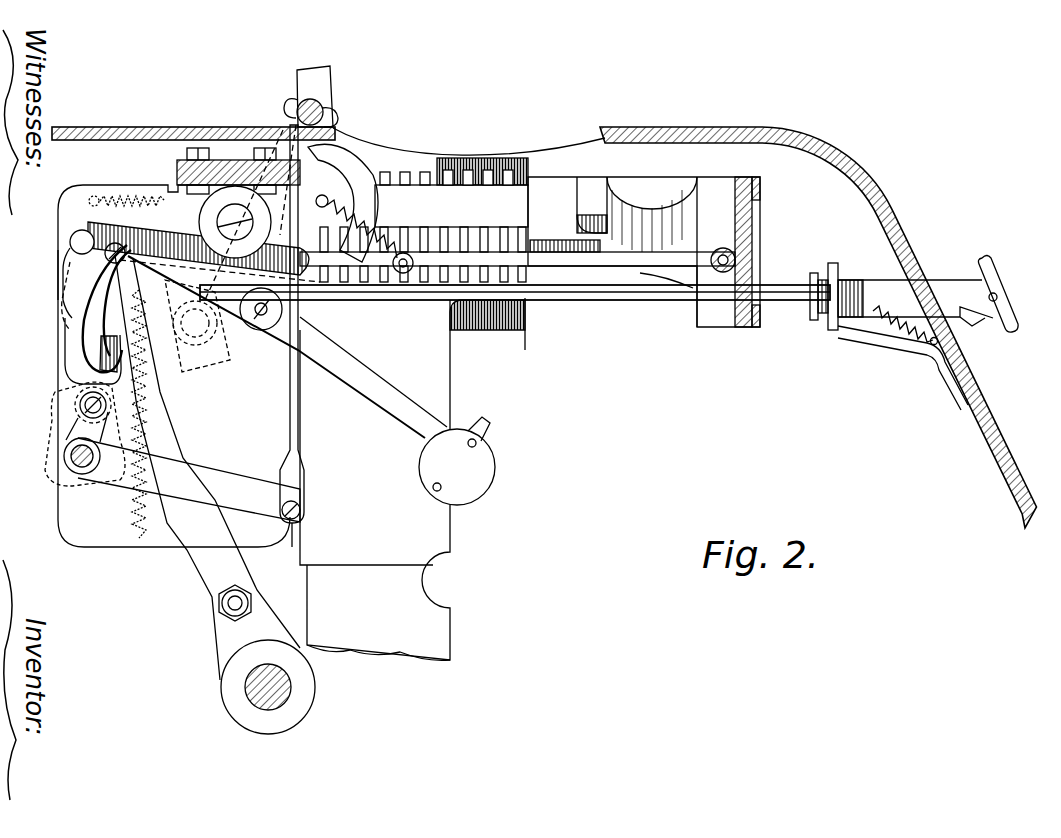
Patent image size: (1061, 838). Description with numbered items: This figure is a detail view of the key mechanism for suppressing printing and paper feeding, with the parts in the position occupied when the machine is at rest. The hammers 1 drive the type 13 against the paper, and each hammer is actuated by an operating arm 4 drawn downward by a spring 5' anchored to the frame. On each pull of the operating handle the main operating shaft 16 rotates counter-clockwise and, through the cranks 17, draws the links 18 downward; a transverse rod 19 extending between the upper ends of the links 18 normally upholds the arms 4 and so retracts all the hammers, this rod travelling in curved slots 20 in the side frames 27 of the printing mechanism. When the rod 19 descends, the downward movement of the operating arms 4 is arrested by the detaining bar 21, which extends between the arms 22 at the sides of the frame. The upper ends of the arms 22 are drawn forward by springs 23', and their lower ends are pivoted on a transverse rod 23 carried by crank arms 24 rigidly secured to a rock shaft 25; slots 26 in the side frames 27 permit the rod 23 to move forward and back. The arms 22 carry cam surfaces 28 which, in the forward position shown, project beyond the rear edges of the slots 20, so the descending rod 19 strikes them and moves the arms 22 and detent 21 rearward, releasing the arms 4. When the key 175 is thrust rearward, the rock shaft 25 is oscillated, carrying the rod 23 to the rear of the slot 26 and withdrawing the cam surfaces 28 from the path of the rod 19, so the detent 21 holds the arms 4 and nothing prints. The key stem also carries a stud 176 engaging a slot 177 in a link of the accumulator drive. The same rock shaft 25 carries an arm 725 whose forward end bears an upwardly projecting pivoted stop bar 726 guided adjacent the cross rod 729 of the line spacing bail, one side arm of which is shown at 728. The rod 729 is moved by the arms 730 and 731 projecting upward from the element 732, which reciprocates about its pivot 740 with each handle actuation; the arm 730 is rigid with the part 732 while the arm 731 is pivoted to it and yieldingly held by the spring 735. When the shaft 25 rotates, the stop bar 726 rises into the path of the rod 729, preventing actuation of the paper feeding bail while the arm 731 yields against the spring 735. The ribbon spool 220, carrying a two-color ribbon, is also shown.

The hammer 1 is at (457, 461).
The operating arm 4 is at (276, 347).
The spring 5' is at (119, 414).
The type 13 is at (405, 170).
The main operating shaft 16 is at (285, 700).
The crank 17 is at (238, 637).
The link 18 is at (196, 533).
The transverse rod 19 is at (186, 263).
The curved slot 20 is at (86, 306).
The detaining bar 21 is at (60, 302).
The arm 22 is at (56, 276).
The transverse rod 23 is at (59, 414).
The spring 23' is at (127, 180).
The crank arm 24 is at (76, 430).
The rock shaft 25 is at (68, 462).
The slot 26 is at (78, 404).
The side frame 27 is at (174, 366).
The cam surface 28 is at (100, 338).
The elimination key 175 is at (1000, 285).
The stud 176 is at (966, 318).
The slot 177 is at (885, 330).
The ribbon spool 220 is at (508, 160).
The arm 725 is at (210, 485).
The stop bar 726 is at (300, 430).
The side arm 728 is at (318, 78).
The cross rod 729 is at (325, 104).
The arm 730 is at (286, 104).
The arm 731 is at (340, 117).
The reciprocating element 732 is at (196, 328).
The spring 735 is at (370, 208).
The pivot 740 is at (235, 222).